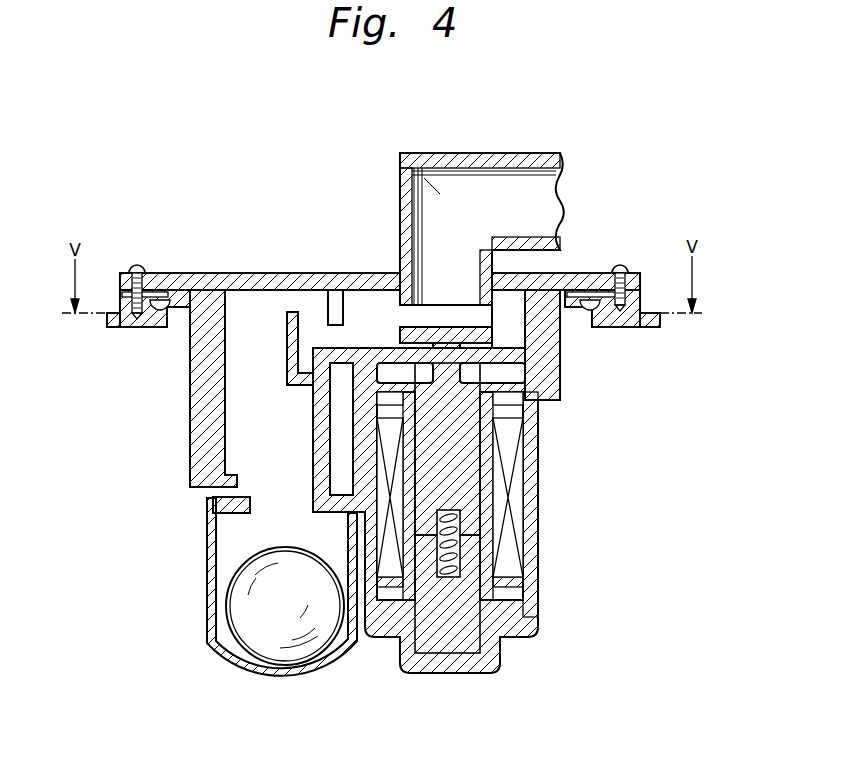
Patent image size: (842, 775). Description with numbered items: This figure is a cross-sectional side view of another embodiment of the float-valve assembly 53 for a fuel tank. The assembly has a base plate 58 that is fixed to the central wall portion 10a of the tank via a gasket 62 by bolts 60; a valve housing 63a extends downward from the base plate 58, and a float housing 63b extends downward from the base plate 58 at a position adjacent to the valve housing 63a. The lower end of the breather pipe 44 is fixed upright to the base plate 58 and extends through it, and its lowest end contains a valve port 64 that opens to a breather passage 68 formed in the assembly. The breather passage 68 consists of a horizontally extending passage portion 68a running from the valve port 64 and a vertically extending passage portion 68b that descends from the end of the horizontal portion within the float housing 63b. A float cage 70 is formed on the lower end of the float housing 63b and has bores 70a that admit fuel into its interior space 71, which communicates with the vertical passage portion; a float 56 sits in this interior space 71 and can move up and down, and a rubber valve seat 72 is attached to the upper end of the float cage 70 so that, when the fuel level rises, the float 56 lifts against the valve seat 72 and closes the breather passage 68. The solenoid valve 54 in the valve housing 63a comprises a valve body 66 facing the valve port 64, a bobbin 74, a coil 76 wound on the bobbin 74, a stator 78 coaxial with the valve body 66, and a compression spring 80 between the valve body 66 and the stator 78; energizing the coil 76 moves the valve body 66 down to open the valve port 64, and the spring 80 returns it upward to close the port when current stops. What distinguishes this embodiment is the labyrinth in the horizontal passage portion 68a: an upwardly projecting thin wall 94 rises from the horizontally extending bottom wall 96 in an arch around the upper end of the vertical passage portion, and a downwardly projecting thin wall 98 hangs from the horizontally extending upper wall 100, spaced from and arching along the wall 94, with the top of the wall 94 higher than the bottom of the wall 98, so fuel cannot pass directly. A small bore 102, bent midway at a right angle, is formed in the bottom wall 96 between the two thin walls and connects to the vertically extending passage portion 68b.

The central wall portion 10a is at (112, 327).
The breather pipe 44 is at (450, 153).
The float-valve assembly 53 is at (153, 260).
The solenoid valve 54 is at (540, 462).
The float 56 is at (248, 623).
The base plate 58 is at (574, 277).
The bolts 60 is at (619, 265).
The gasket 62 is at (638, 292).
The valve housing 63a is at (536, 477).
The float housing 63b is at (203, 383).
The valve port 64 is at (455, 307).
The valve body 66 is at (462, 427).
The breather passage 68 is at (238, 383).
The horizontally extending passage portion 68a is at (318, 305).
The vertically extending passage portion 68b is at (237, 322).
The float cage 70 is at (210, 545).
The bores 70a is at (210, 597).
The interior space 71 is at (223, 628).
The valve seat 72 is at (232, 508).
The bobbin 74 is at (487, 497).
The coil 76 is at (512, 533).
The stator 78 is at (467, 630).
The compression spring 80 is at (460, 550).
The upwardly projecting thin wall 94 is at (283, 340).
The horizontally extending bottom wall 96 is at (383, 340).
The downwardly projecting thin wall 98 is at (328, 305).
The horizontally extending upper wall 100 is at (352, 303).
The small bore 102 is at (287, 380).